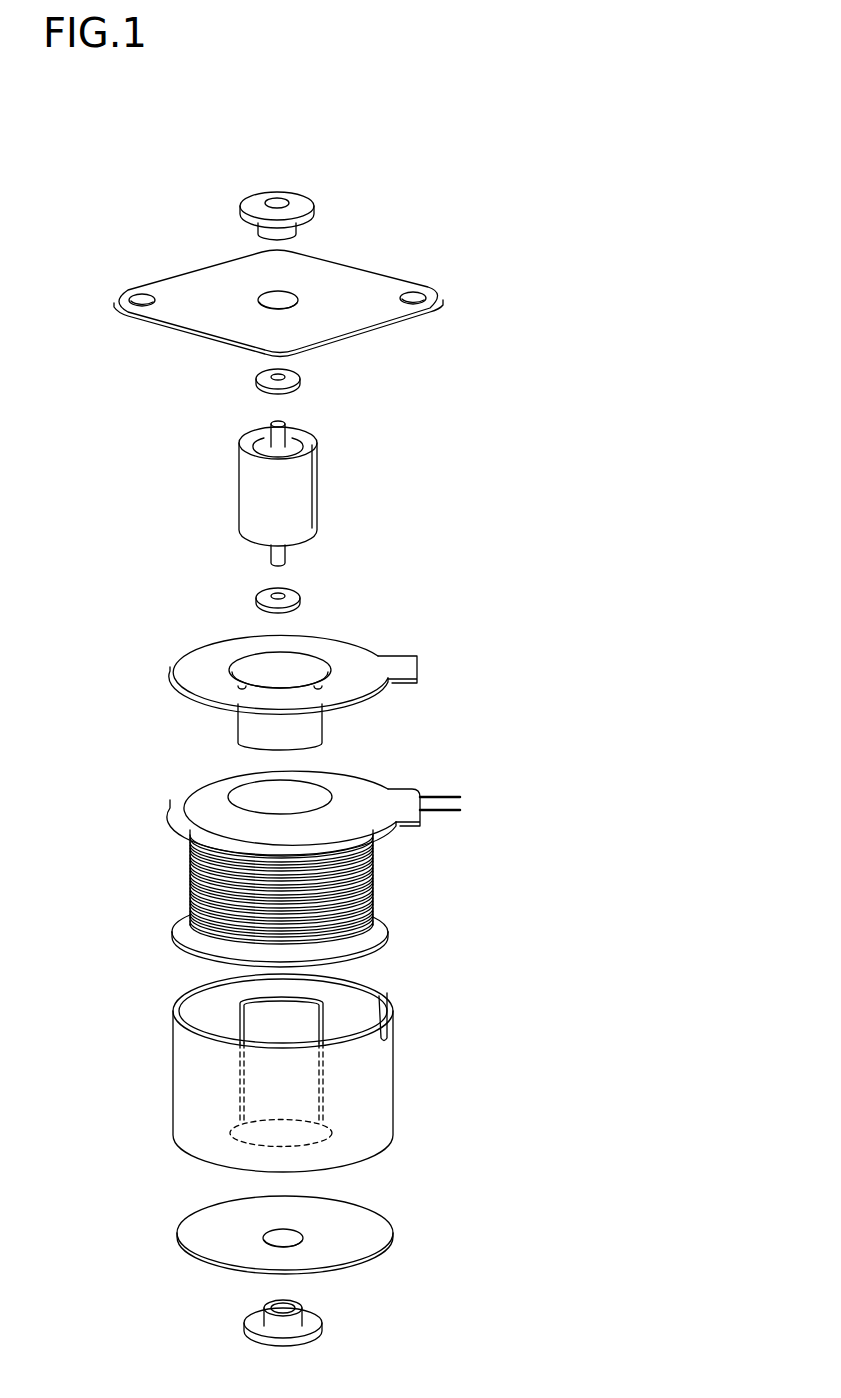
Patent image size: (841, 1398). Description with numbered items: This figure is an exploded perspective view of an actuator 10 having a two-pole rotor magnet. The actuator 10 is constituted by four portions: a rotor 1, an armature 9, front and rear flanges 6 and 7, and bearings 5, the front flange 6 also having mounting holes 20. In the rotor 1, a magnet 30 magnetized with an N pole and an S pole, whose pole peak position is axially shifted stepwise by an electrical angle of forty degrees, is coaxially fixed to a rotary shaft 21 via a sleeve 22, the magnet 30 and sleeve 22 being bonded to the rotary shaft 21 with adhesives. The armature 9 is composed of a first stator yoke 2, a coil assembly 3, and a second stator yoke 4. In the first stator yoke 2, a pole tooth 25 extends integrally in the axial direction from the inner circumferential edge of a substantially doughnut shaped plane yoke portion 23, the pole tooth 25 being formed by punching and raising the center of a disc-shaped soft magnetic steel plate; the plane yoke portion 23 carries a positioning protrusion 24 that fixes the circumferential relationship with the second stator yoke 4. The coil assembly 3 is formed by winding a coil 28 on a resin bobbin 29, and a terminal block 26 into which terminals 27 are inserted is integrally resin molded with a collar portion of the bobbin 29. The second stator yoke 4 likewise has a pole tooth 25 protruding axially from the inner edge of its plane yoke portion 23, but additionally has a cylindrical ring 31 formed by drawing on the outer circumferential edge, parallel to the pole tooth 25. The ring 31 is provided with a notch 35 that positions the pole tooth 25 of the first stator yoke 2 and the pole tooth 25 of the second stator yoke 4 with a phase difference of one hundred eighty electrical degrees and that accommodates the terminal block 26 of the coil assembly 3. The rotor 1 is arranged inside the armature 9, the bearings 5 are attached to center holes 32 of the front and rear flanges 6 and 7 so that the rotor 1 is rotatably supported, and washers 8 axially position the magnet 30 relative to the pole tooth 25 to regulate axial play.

The rotor 1 is at (373, 493).
The first stator yoke 2 is at (385, 884).
The coil assembly 3 is at (379, 859).
The second stator yoke 4 is at (359, 1073).
The bearing 5 is at (303, 198).
The front flange 6 is at (312, 293).
The rear flange 7 is at (372, 1242).
The washer 8 is at (300, 376).
The armature 9 is at (171, 1167).
The actuator 10 is at (668, 182).
The mounting hole 20 is at (138, 293).
The rotary shaft 21 is at (286, 430).
The sleeve 22 is at (290, 450).
The plane yoke portion 23 is at (338, 648).
The positioning protrusion 24 is at (413, 663).
The pole tooth 25 is at (310, 725).
The terminal block 26 is at (405, 793).
The terminal 27 is at (465, 793).
The coil 28 is at (350, 893).
The bobbin 29 is at (373, 933).
The magnet 30 is at (302, 505).
The cylindrical ring 31 is at (370, 1087).
The center hole 32 is at (282, 297).
The notch 35 is at (397, 997).